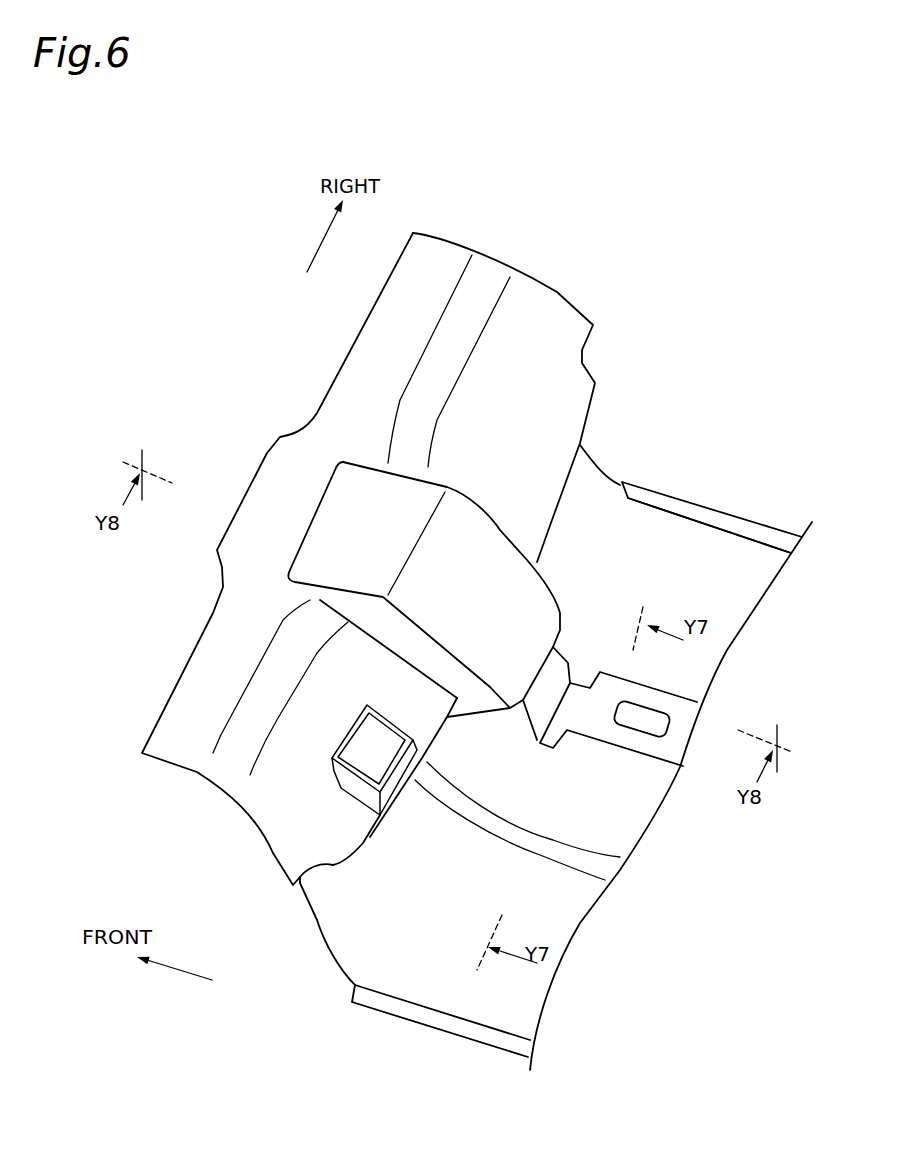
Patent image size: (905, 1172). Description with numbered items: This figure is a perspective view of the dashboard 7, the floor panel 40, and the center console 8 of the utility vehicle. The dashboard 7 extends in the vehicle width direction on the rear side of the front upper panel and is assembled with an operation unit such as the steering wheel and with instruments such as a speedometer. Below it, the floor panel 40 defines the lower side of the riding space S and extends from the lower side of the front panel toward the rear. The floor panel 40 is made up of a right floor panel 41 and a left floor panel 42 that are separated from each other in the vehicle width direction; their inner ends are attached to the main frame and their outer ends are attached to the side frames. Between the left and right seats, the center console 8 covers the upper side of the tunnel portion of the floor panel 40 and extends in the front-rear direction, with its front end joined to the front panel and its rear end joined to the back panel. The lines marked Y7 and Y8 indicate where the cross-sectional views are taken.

The dashboard 7 is at (550, 308).
The center console 8 is at (680, 700).
The floor panel 40 is at (682, 537).
The right floor panel 41 is at (715, 545).
The left floor panel 42 is at (405, 978).
The riding space S is at (620, 523).